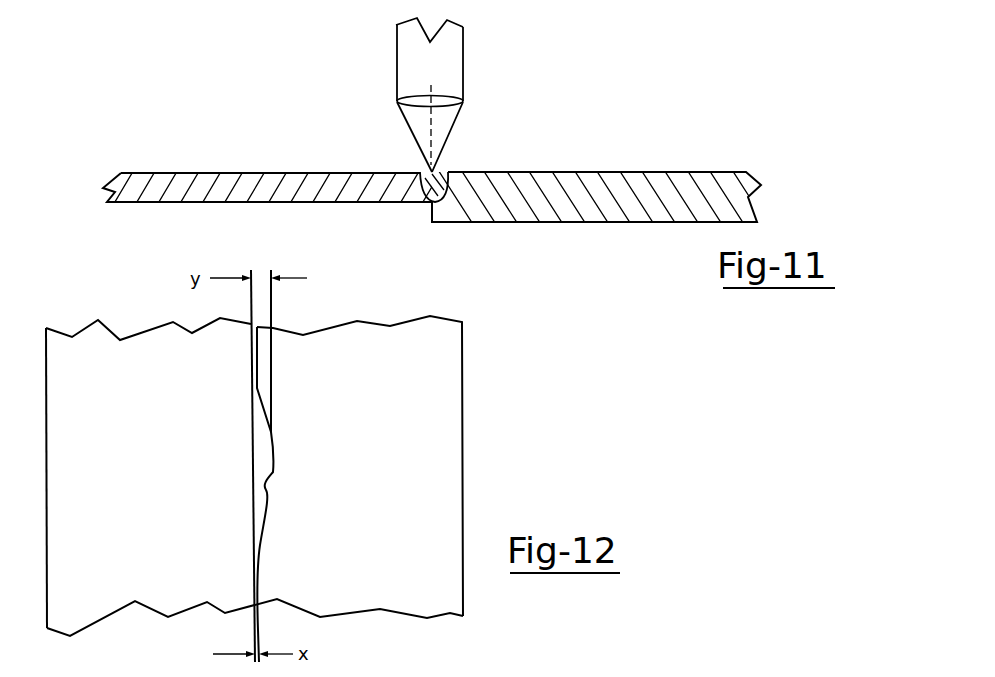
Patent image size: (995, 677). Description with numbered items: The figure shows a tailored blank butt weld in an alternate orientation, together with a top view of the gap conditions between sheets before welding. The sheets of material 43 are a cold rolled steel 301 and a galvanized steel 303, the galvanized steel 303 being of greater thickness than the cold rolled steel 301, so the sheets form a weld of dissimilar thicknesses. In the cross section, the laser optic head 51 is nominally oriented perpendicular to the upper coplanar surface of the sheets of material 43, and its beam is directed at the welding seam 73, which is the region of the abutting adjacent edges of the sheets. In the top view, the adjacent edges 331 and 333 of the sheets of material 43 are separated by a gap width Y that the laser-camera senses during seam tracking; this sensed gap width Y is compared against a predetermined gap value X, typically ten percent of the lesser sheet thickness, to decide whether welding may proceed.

In FIG. 11, the sheets of material 43 is at (437, 155).
In FIG. 12, the sheets of material 43 is at (315, 458).
In FIG. 11, the laser optic head 51 is at (448, 52).
In FIG. 11, the welding seam 73 is at (434, 196).
In FIG. 11, the cold rolled steel 301 is at (618, 180).
In FIG. 12, the cold rolled steel 301 is at (413, 498).
In FIG. 11, the galvanized steel 303 is at (296, 193).
In FIG. 12, the galvanized steel 303 is at (92, 418).
In FIG. 12, the adjacent edge 331 is at (272, 476).
In FIG. 12, the adjacent edge 333 is at (256, 468).